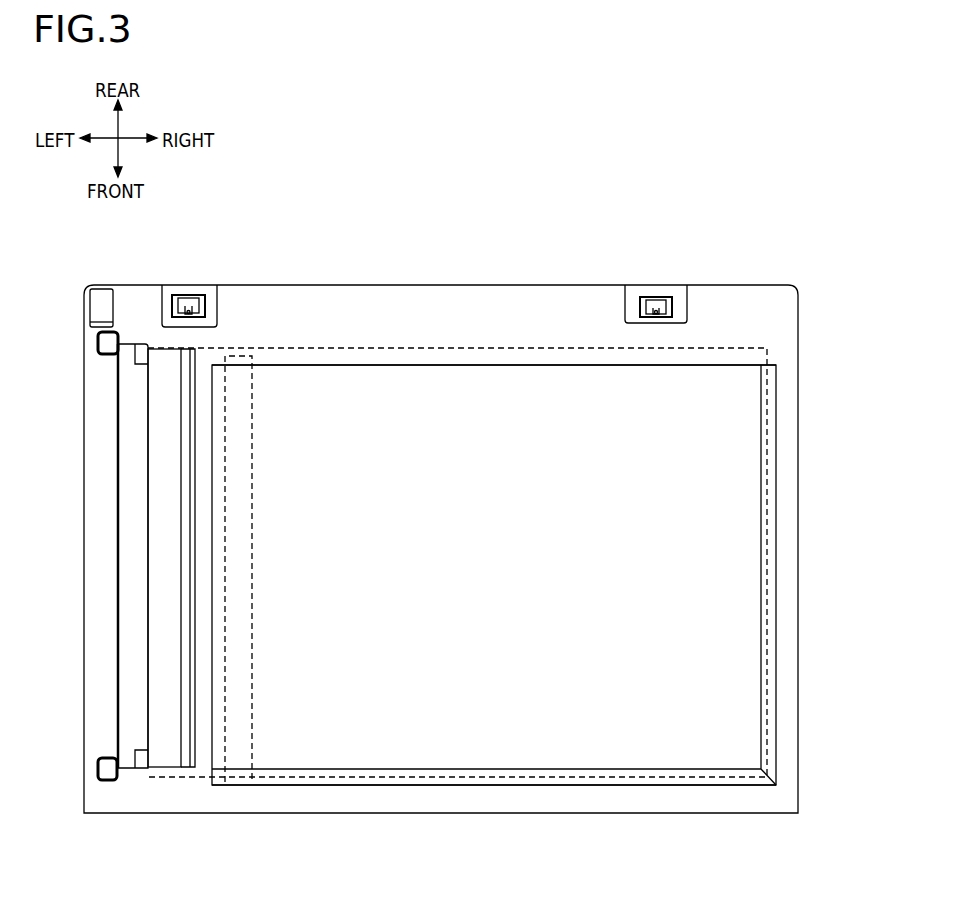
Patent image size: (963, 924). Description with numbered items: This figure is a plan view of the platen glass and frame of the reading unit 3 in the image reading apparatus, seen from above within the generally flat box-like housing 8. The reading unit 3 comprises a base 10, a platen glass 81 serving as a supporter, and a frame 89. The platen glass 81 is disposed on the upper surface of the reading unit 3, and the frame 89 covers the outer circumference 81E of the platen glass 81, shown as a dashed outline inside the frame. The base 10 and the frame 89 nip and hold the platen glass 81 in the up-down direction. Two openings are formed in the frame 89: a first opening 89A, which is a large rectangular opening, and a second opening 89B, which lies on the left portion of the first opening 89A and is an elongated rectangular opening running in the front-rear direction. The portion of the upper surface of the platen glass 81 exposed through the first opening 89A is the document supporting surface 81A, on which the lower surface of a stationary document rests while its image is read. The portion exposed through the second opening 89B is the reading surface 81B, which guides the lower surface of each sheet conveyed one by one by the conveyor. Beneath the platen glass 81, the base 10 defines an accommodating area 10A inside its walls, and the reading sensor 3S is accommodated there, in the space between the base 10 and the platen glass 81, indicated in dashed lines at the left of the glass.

The reading unit 3 is at (458, 737).
The reading sensor 3S is at (238, 730).
The housing 8 is at (799, 786).
The base 10 is at (703, 722).
The accommodating area 10A is at (627, 707).
The platen glass 81 is at (698, 579).
The document supporting surface 81A is at (542, 720).
The reading surface 81B is at (165, 643).
The outer circumference 81E is at (412, 348).
The frame 89 is at (750, 322).
The first opening 89A is at (523, 365).
The second opening 89B is at (150, 713).